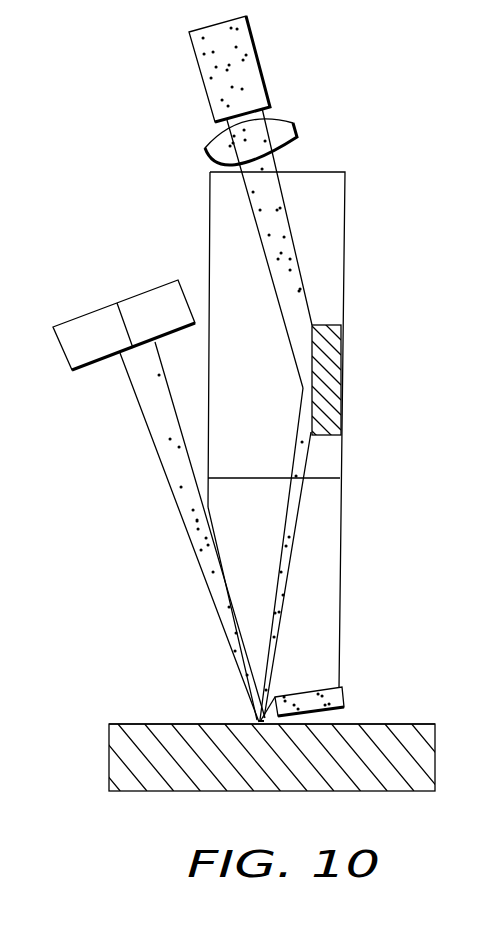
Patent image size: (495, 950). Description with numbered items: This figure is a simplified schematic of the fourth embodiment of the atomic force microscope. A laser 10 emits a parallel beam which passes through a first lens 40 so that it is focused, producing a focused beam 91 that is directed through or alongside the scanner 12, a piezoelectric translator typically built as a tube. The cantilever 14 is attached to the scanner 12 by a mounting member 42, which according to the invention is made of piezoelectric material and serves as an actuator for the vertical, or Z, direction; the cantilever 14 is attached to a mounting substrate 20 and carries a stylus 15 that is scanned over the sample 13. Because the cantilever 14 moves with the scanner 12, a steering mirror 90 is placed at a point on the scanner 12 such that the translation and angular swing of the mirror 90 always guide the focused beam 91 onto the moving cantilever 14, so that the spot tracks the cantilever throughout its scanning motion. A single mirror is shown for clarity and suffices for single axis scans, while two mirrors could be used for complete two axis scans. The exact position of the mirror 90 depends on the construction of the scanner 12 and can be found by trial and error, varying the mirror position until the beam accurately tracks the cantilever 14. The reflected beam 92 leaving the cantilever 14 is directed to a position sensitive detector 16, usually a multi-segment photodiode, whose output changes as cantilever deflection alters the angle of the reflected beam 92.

The laser 10 is at (200, 63).
The first lens 40 is at (300, 135).
The focused laser beam 91 is at (245, 193).
The scanner 12 is at (345, 203).
The mounting member 42 is at (342, 502).
The steering mirror 90 is at (343, 363).
The position sensitive detector 16 is at (140, 292).
The reflected beam 92 is at (163, 473).
The mounting substrate 20 is at (343, 688).
The stylus 15 is at (255, 722).
The cantilever 14 is at (266, 721).
The sample 13 is at (110, 755).